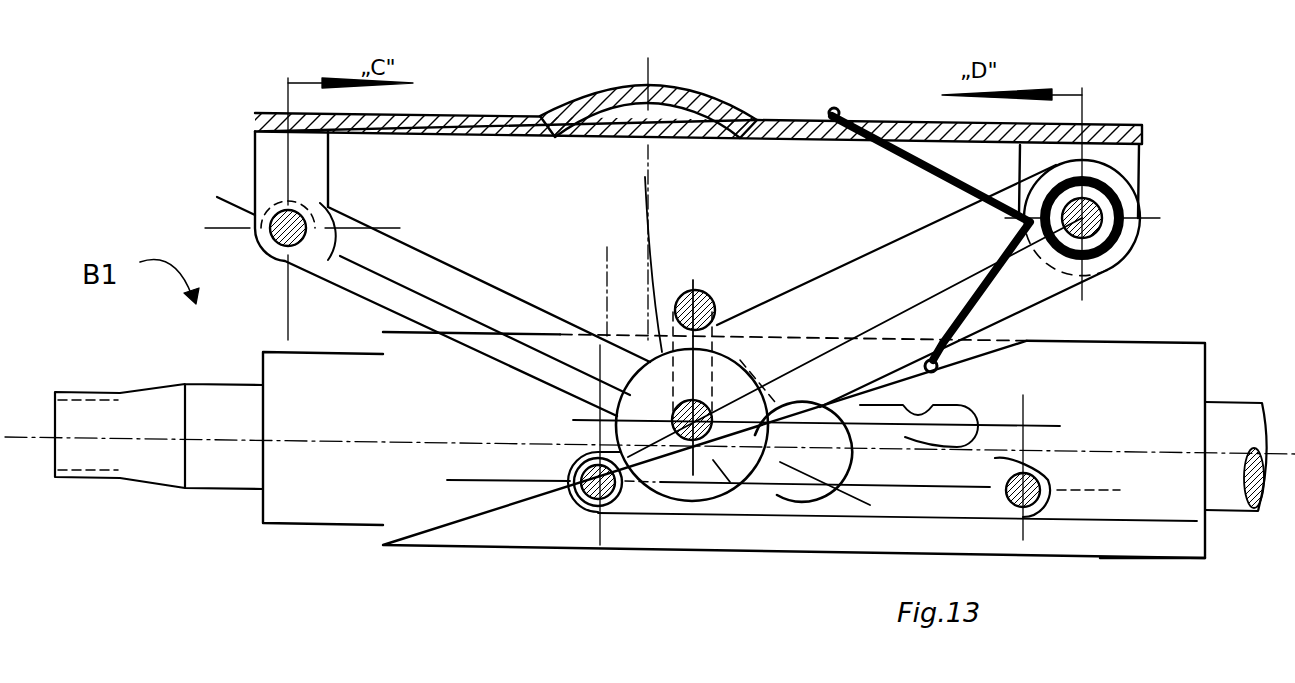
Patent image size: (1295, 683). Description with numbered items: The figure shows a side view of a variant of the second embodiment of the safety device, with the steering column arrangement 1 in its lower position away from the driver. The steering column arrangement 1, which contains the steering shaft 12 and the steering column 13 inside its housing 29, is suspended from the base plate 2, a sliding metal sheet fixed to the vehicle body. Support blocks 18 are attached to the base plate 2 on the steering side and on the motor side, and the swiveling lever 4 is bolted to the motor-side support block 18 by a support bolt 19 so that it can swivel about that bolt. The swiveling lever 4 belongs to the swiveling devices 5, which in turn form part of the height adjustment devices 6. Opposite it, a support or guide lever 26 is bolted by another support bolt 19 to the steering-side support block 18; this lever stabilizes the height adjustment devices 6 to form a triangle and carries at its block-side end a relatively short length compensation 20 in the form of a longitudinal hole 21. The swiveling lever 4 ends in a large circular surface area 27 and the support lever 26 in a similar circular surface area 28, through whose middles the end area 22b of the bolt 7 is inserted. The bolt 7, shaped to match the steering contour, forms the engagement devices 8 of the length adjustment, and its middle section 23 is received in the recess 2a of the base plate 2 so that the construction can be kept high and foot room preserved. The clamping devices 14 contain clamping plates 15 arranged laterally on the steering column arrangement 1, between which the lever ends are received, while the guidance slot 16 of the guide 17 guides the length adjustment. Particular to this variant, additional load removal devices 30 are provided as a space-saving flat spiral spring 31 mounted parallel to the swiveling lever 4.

The steering column arrangement 1 is at (527, 577).
The base plate 2 is at (462, 115).
The recess 2a is at (598, 88).
The swiveling lever 4 is at (886, 260).
The swiveling devices 5 is at (810, 270).
The height adjustment devices 6 is at (607, 238).
The bolt 7 is at (714, 298).
The engagement devices 8 is at (670, 287).
The steering shaft 12 is at (90, 474).
The steering column 13 is at (273, 511).
The clamping devices 14 is at (851, 520).
The clamping plates 15 is at (1043, 453).
The guidance slot 16 is at (928, 418).
The guide 17 is at (953, 440).
The support block 18 is at (265, 163).
The support bolt 19 is at (268, 250).
The length compensation 20 is at (349, 229).
The longitudinal hole 21 is at (388, 242).
The end area of the bolt 22b is at (647, 427).
The middle section of the bolt 23 is at (697, 290).
The support lever 26 is at (447, 283).
The circular surface area 27 is at (695, 486).
The circular surface area 28 is at (825, 489).
The housing 29 is at (1118, 542).
The load removal devices 30 is at (998, 232).
The flat spiral spring 31 is at (1000, 285).